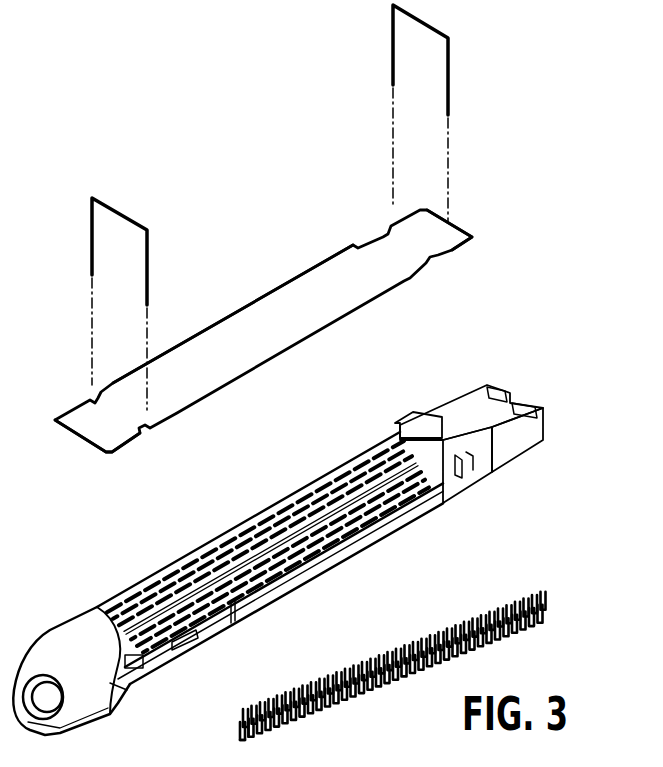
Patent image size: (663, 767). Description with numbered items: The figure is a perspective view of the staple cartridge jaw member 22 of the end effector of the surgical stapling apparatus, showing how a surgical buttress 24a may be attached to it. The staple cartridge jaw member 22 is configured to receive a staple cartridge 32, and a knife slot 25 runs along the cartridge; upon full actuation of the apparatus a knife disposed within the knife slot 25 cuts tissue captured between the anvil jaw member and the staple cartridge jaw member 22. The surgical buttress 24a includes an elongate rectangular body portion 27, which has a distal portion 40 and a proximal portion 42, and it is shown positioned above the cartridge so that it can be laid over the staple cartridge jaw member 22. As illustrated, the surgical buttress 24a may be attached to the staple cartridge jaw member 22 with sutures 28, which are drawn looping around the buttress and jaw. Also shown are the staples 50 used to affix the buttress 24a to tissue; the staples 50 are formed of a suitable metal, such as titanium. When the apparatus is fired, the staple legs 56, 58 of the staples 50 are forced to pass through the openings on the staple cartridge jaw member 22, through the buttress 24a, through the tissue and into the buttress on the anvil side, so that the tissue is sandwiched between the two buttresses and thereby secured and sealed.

The staple cartridge jaw member 22 is at (278, 560).
The surgical buttress 24a is at (274, 361).
The knife slot 25 is at (376, 440).
The elongate rectangular body portion 27 is at (248, 323).
The sutures 28 is at (392, 30).
The staple cartridge 32 is at (403, 493).
The distal portion 40 is at (123, 444).
The proximal portion 42 is at (452, 250).
The staples 50 is at (404, 660).
The staple leg 56 is at (235, 707).
The staple leg 58 is at (249, 704).